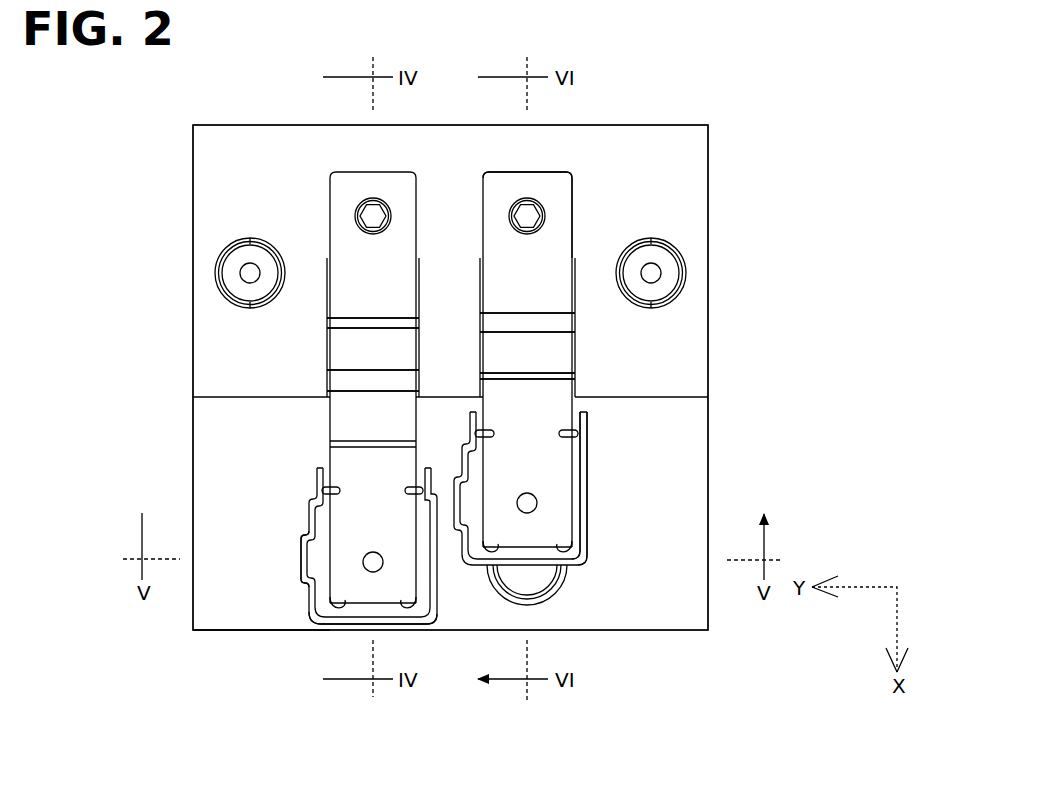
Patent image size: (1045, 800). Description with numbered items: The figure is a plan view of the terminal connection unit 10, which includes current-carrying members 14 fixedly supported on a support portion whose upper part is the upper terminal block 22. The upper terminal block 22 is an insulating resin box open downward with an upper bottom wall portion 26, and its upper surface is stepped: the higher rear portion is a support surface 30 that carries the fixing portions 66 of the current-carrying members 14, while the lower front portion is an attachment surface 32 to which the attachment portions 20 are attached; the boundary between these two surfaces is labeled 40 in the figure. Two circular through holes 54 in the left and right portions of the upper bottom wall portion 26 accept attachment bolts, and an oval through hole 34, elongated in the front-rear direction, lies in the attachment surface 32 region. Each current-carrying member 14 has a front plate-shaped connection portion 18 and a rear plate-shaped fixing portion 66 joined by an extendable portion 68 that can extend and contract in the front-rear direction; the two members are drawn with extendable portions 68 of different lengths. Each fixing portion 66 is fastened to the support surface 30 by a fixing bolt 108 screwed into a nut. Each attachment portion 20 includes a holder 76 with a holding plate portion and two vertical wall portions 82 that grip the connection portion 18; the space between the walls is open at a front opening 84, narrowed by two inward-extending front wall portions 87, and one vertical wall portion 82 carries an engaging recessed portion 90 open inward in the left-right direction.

The terminal connection unit 10 is at (770, 118).
The current-carrying member 14 is at (458, 328).
The connection portion 18 is at (294, 584).
The attachment portion 20 is at (606, 556).
The upper terminal block 22 is at (712, 195).
The upper bottom wall portion 26 is at (690, 352).
The support surface 30 is at (210, 320).
The attachment surface 32 is at (198, 607).
The through hole 34 is at (505, 580).
The step 40 is at (335, 390).
The through hole 54 is at (670, 265).
The fixing portion 66 is at (557, 185).
The extendable portion 68 is at (327, 362).
The holder 76 is at (593, 505).
The vertical wall portion 82 is at (583, 527).
The front opening 84 is at (558, 583).
The front wall portion 87 is at (332, 620).
The engaging recessed portion 90 is at (313, 553).
The fixing bolt 108 is at (373, 213).